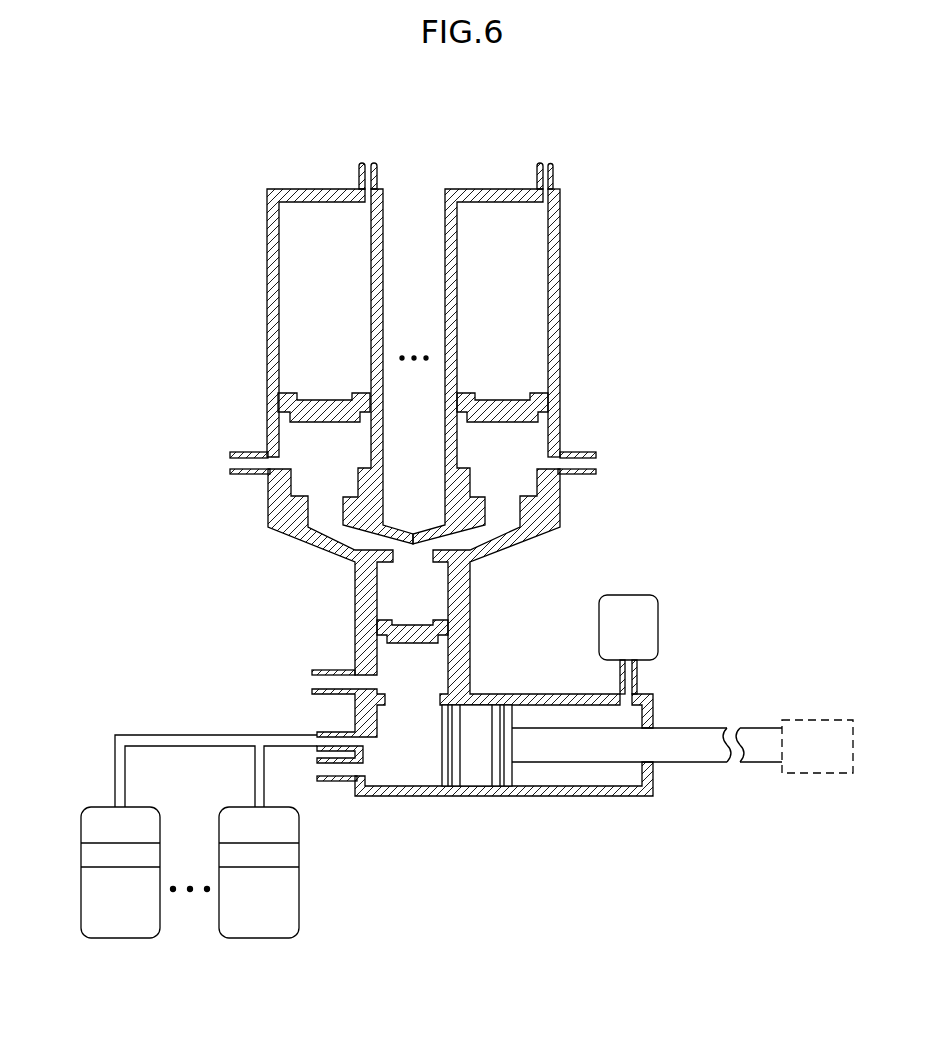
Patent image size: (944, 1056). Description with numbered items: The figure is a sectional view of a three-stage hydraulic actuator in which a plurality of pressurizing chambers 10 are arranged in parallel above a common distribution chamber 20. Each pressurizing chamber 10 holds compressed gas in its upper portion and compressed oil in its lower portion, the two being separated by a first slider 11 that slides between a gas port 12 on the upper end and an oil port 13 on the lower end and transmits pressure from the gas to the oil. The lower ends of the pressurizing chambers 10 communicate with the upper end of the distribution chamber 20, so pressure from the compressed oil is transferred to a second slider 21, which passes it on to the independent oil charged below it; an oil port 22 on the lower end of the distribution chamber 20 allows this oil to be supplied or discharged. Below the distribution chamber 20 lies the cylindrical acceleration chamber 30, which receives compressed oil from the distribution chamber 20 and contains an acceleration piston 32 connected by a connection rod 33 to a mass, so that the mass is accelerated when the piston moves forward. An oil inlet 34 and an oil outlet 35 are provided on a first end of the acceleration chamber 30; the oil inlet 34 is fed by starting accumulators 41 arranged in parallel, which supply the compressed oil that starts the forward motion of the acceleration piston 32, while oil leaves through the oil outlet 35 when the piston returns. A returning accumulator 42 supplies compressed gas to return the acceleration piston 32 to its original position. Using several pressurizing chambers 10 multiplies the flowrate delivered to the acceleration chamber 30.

The pressurizing chamber 10 is at (267, 299).
The first slider 11 is at (302, 409).
The gas port 12 is at (358, 175).
The oil port 13 is at (248, 470).
The distribution chamber 20 is at (470, 578).
The second slider 21 is at (447, 630).
The oil port 22 is at (323, 670).
The acceleration chamber 30 is at (575, 795).
The acceleration piston 32 is at (473, 768).
The connection rod 33 is at (684, 753).
The oil inlet 34 is at (332, 732).
The oil outlet 35 is at (332, 782).
The starting accumulator 41 is at (119, 938).
The returning accumulator 42 is at (658, 615).